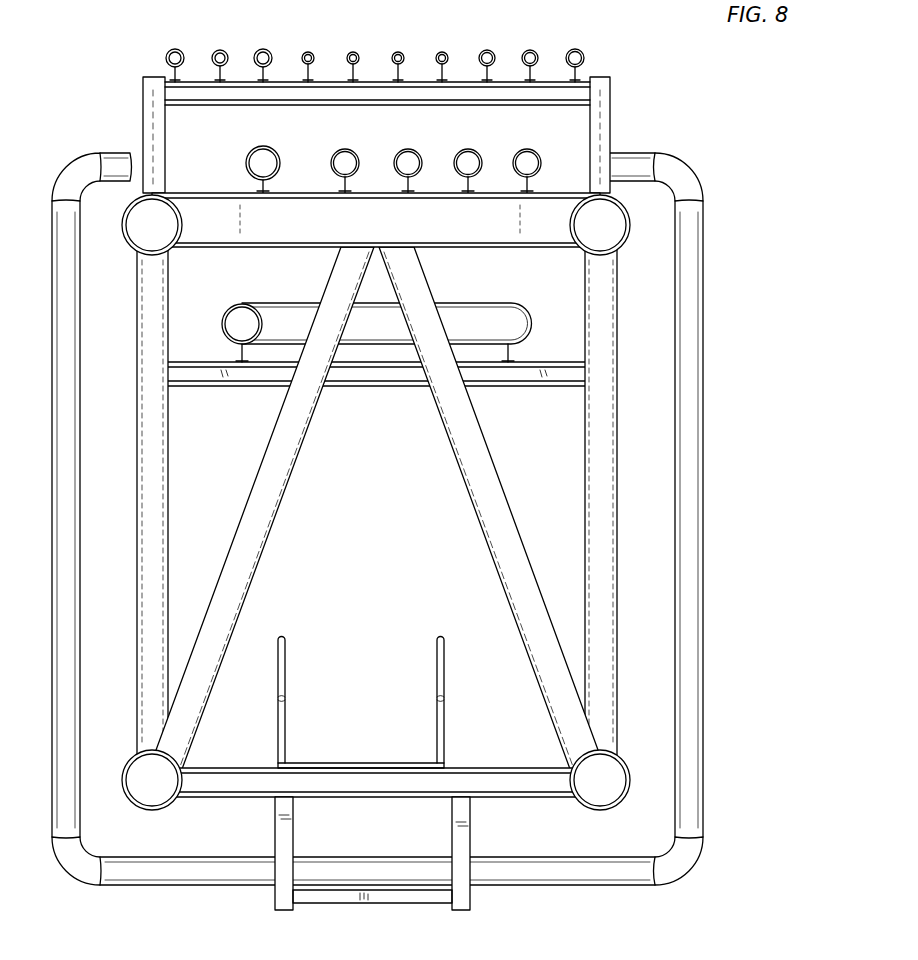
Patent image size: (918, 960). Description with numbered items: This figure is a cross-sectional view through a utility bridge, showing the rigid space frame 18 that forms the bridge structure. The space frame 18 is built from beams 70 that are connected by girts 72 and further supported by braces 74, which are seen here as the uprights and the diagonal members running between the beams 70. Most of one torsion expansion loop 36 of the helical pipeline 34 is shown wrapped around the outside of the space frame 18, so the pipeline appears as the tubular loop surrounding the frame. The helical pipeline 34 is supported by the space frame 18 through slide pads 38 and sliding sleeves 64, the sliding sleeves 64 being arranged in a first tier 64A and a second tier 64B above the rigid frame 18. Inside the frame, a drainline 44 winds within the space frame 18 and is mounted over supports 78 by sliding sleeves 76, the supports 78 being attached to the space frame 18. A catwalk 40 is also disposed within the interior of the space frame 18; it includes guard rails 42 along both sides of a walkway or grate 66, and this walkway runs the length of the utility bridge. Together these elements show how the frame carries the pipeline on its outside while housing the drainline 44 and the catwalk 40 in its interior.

The space frame 18 is at (619, 496).
The helical pipeline 34 is at (697, 866).
The torsion expansion loop 36 is at (698, 600).
The slide pads 38 is at (472, 900).
The catwalk 40 is at (400, 633).
The guard rails 42 is at (447, 688).
The drainline 44 is at (388, 346).
The sliding sleeves 64 is at (311, 47).
The first tier 64A is at (207, 156).
The second tier 64B is at (152, 55).
The walkway or grate 66 is at (352, 762).
The beams 70 is at (131, 251).
The girts 72 is at (234, 767).
The braces 74 is at (136, 481).
The sliding sleeves 76 is at (233, 305).
The supports 78 is at (225, 392).